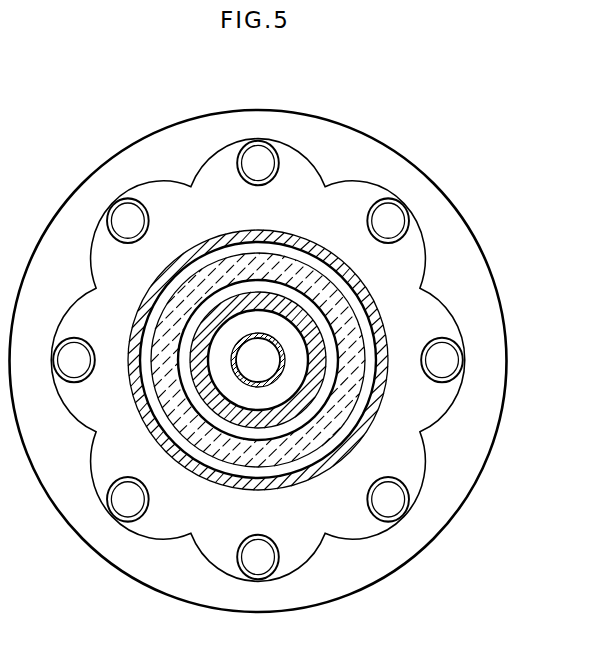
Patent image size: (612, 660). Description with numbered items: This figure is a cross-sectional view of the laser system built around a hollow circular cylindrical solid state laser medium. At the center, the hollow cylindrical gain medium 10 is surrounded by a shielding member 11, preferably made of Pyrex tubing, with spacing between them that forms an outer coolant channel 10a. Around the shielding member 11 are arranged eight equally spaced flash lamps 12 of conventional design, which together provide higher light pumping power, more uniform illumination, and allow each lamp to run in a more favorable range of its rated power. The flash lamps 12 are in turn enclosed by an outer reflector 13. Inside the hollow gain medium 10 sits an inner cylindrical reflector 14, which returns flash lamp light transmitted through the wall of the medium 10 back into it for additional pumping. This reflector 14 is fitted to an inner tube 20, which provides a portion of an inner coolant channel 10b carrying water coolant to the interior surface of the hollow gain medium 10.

The hollow cylindrical solid state laser medium 10 is at (347, 328).
The outer coolant channel 10a is at (350, 297).
The inner coolant channel 10b is at (333, 364).
The shielding member 11 is at (324, 247).
The flash lamps 12 is at (72, 355).
The outer reflector 13 is at (397, 548).
The inner cylindrical reflector 14 is at (314, 393).
The inner tube 20 is at (260, 367).